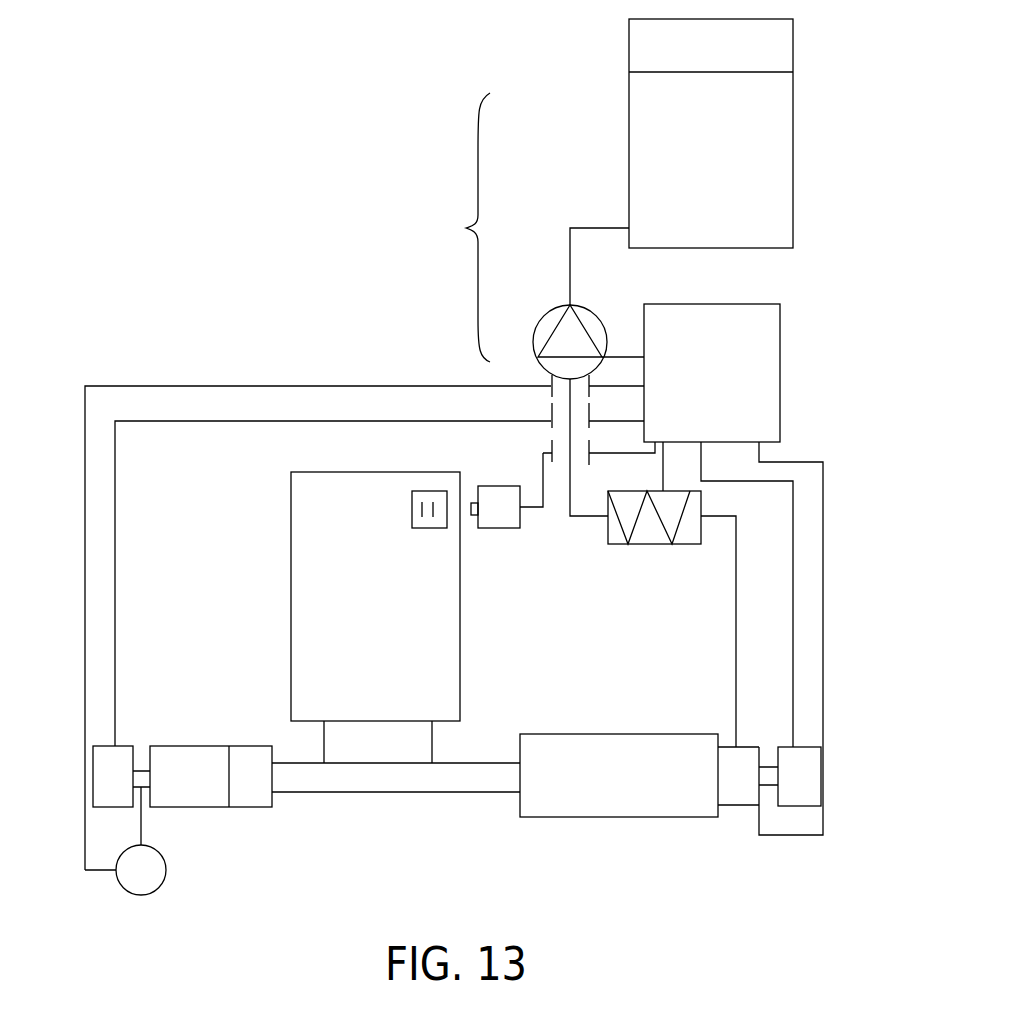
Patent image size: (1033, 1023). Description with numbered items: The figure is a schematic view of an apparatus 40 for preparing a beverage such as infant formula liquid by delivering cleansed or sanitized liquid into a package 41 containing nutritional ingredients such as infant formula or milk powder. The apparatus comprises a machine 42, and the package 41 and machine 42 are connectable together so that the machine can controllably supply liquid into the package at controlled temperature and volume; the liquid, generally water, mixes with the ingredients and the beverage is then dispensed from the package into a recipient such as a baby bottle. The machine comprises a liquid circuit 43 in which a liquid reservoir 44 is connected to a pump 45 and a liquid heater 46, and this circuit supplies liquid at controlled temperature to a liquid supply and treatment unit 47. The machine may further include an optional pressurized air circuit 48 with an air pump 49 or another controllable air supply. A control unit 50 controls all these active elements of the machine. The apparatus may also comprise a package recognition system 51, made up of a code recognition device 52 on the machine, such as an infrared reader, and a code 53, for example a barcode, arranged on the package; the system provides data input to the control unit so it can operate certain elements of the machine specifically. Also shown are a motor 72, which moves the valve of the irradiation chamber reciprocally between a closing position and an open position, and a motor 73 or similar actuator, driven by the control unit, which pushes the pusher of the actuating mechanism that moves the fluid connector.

The apparatus 40 is at (218, 178).
The package 41 is at (225, 613).
The machine 42 is at (533, 227).
The liquid circuit 43 is at (735, 645).
The liquid reservoir 44 is at (796, 162).
The pump 45 is at (551, 312).
The liquid heater 46 is at (615, 544).
The liquid supply and treatment unit 47 is at (690, 822).
The pressurized air circuit 48 is at (167, 866).
The air pump 49 is at (165, 880).
The control unit 50 is at (781, 383).
The package recognition system 51 is at (488, 596).
The code recognition device 52 is at (500, 528).
The code 53 is at (425, 528).
The motor 72 is at (800, 835).
The motor 73 is at (107, 797).